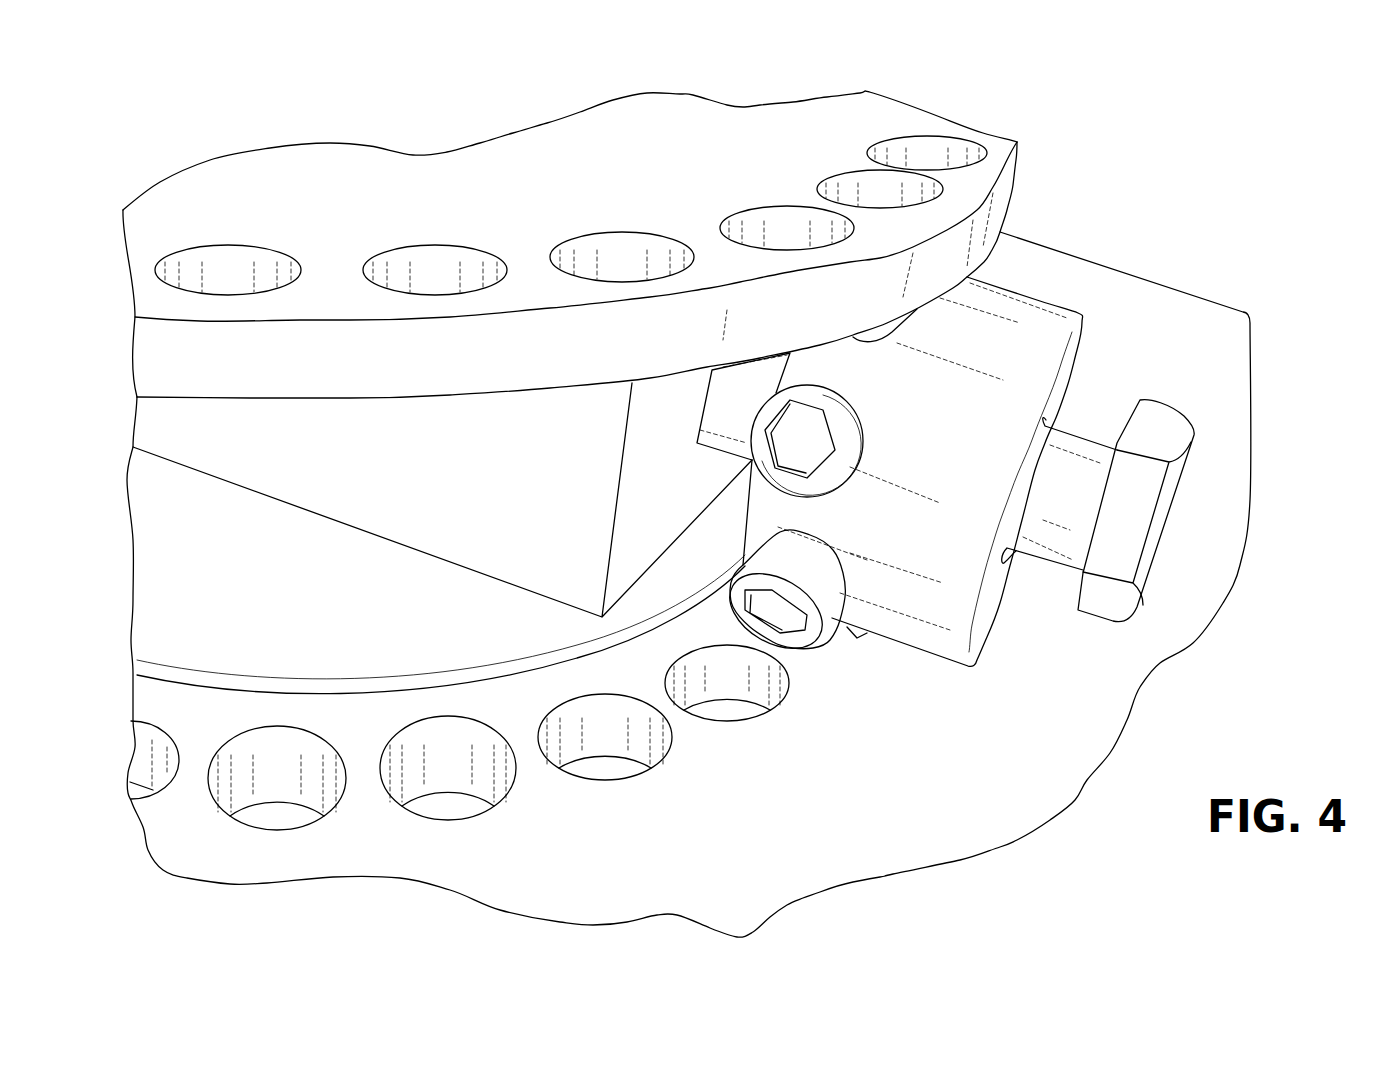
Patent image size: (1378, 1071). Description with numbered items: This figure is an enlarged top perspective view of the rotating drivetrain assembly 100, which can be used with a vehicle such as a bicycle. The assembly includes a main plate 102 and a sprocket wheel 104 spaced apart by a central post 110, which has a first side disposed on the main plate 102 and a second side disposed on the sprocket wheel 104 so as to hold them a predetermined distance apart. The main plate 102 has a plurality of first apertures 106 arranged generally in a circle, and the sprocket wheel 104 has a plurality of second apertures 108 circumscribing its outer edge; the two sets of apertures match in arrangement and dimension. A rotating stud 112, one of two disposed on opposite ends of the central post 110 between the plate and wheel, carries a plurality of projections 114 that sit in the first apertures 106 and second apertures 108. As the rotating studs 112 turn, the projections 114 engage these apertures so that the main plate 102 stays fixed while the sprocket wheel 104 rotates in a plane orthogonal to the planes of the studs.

The rotating drivetrain assembly 100 is at (1173, 147).
The main plate 102 is at (942, 802).
The sprocket wheel 104 is at (727, 135).
The first apertures 106 is at (642, 738).
The second apertures 108 is at (935, 152).
The central post 110 is at (417, 512).
The rotating studs 112 is at (937, 632).
The projections 114 is at (852, 420).